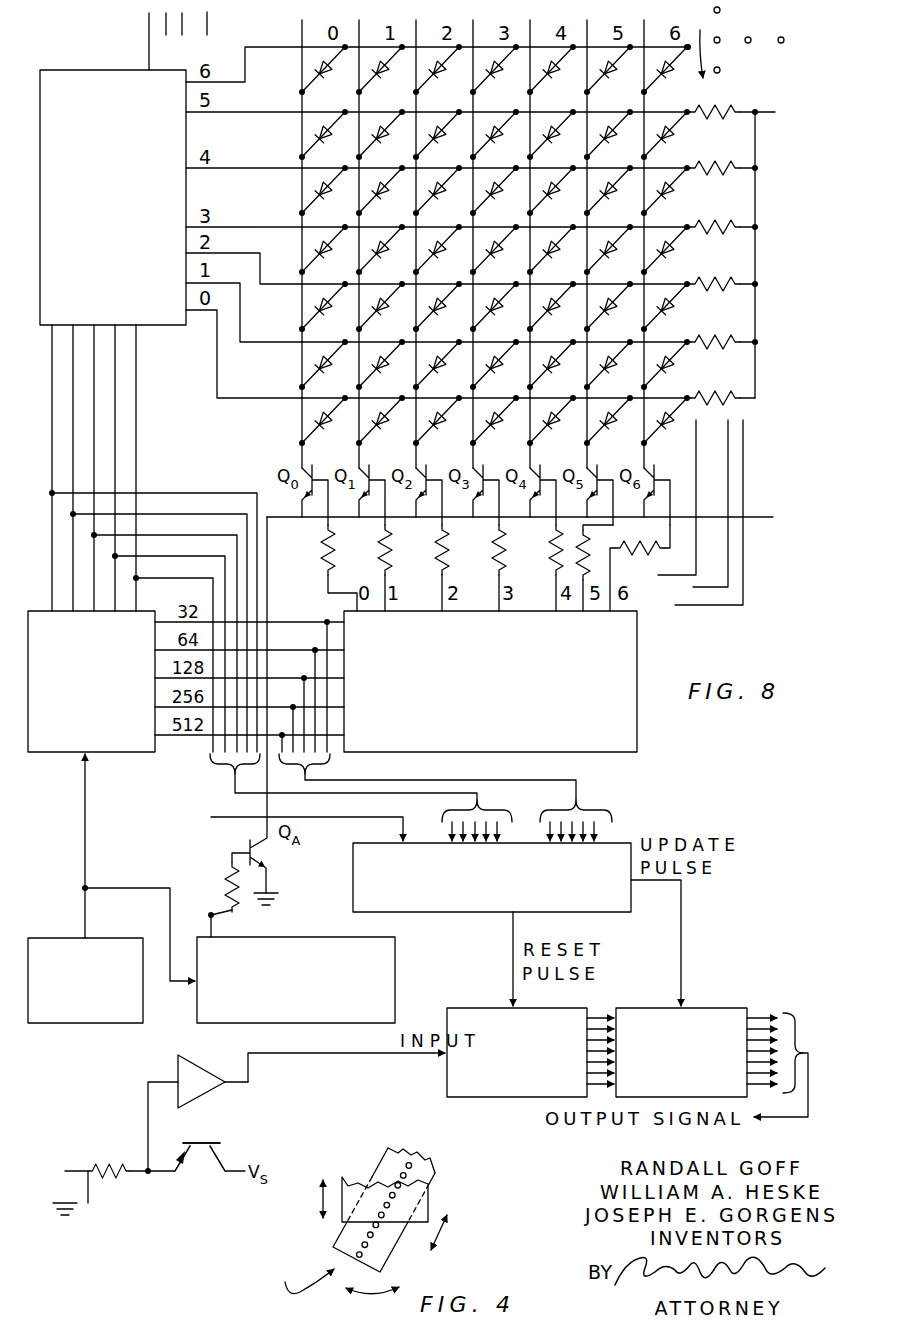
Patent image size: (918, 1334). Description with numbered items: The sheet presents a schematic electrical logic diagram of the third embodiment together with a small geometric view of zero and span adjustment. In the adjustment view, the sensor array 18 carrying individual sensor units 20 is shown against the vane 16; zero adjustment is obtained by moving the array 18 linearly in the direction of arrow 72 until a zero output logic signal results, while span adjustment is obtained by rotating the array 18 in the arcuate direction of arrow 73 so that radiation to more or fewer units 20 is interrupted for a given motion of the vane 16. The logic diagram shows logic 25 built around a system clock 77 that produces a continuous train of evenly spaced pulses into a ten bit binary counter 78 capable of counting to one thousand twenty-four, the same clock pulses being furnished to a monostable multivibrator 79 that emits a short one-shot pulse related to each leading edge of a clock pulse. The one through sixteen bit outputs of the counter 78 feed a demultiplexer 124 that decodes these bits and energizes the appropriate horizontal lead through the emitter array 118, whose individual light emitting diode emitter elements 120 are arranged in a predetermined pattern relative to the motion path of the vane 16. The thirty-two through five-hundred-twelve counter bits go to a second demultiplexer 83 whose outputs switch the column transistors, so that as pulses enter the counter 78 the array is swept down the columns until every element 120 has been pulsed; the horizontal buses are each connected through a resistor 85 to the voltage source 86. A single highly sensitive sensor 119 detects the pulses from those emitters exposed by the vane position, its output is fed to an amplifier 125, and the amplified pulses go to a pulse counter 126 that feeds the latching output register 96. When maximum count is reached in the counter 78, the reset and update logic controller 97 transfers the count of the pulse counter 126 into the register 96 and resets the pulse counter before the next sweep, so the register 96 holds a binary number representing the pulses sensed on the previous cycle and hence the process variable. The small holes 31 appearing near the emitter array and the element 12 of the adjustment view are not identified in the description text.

In FIG. 8, the demultiplexer 124 is at (68, 72).
In FIG. 8, the radiation emitter elements 120 is at (435, 70).
In FIG. 8, the emitter array 118 is at (711, 41).
In FIG. 8, the holes 31 is at (721, 10).
In FIG. 8, the resistor 85 is at (718, 106).
In FIG. 8, the voltage source 86 is at (796, 114).
In FIG. 8, the logic 25 is at (756, 232).
In FIG. 8, the second demultiplexer 83 is at (490, 681).
In FIG. 8, the binary ripple counter 78 is at (100, 742).
In FIG. 8, the reset and update logic controller 97 is at (368, 853).
In FIG. 8, the monostable multivibrator 79 is at (398, 953).
In FIG. 8, the system clock 77 is at (48, 1022).
In FIG. 8, the latching output register 96 is at (705, 1017).
In FIG. 8, the amplifier 125 is at (190, 1063).
In FIG. 8, the pulse counter 126 is at (447, 1080).
In FIG. 8, the sensor 119 is at (192, 1150).
In FIG. 4, the plate 12 is at (320, 1204).
In FIG. 4, the vane 16 is at (427, 1205).
In FIG. 4, the sensor units 20 is at (343, 1223).
In FIG. 4, the sensor array 18 is at (307, 1277).
In FIG. 4, the arrow 72 is at (438, 1236).
In FIG. 4, the arrow 73 is at (374, 1288).